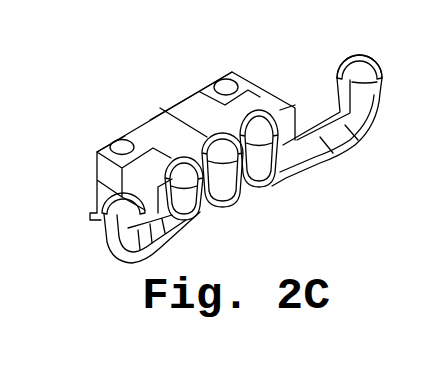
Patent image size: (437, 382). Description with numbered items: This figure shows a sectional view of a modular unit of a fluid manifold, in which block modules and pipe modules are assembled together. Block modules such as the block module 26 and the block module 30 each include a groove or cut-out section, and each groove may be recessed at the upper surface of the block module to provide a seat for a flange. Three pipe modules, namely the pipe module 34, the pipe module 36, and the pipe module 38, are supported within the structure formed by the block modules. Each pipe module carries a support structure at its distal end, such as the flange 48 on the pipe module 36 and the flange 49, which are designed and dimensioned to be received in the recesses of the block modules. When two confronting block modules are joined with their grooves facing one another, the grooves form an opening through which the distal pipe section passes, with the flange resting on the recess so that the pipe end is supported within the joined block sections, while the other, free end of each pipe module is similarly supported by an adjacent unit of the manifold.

The block module 26 is at (188, 88).
The block module 30 is at (140, 118).
The pipe module 34 is at (235, 206).
The pipe module 36 is at (377, 123).
The pipe module 38 is at (112, 251).
The flange 48 is at (268, 112).
The flange 49 is at (368, 55).